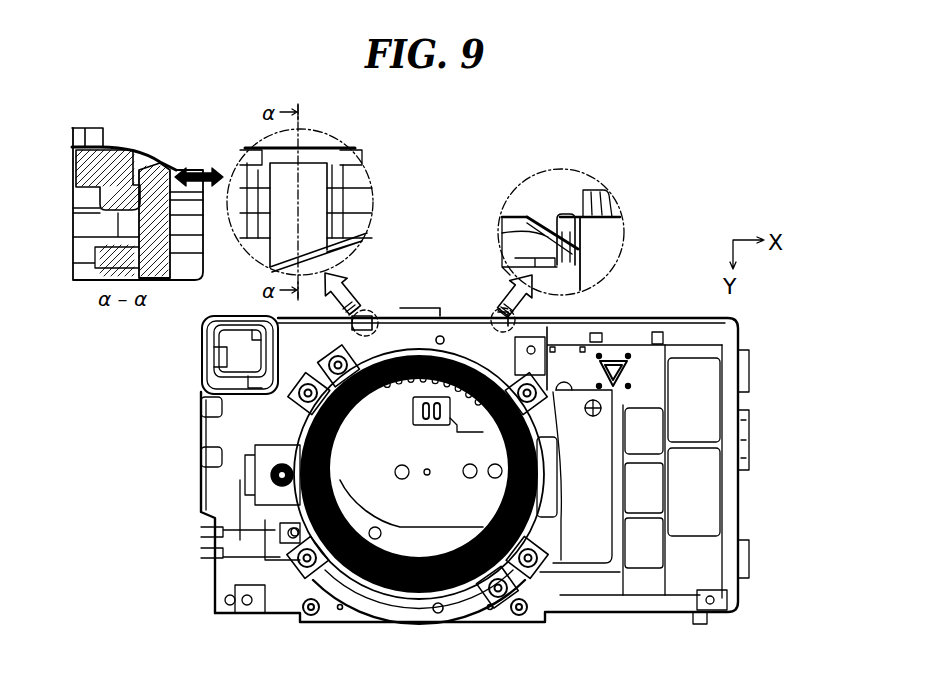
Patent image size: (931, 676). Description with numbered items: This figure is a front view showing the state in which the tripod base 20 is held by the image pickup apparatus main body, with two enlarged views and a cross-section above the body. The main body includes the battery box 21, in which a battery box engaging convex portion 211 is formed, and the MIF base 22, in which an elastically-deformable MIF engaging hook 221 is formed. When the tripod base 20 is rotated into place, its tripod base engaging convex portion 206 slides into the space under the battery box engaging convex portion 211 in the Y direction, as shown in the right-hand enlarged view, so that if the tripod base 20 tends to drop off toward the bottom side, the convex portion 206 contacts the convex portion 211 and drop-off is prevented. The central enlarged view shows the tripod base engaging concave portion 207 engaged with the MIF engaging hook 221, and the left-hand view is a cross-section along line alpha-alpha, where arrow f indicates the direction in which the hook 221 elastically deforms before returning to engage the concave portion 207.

The tripod base 20 is at (428, 308).
The battery box 21 is at (625, 318).
The MIF base 22 is at (410, 340).
The tripod base engaging convex portion 206 is at (578, 249).
The tripod base engaging concave portion 207 is at (130, 183).
The battery box engaging convex portion 211 is at (570, 228).
The MIF engaging hook 221 is at (161, 178).
The arrow f is at (196, 172).